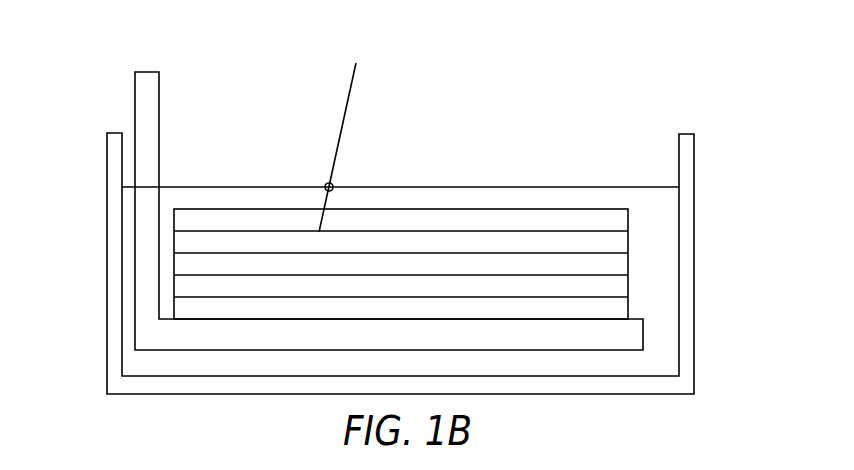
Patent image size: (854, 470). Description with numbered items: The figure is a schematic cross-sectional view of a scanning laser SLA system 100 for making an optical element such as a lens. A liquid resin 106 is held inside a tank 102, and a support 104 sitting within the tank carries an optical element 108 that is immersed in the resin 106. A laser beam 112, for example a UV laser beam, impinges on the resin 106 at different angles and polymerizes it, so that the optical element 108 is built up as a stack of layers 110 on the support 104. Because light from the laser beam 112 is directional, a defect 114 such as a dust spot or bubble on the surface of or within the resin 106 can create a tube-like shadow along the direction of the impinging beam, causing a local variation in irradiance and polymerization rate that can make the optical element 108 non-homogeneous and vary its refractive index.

The processing system 100 is at (602, 79).
The tank 102 is at (693, 230).
The support 104 is at (160, 117).
The liquid resin 106 is at (645, 198).
The optical element 108 is at (172, 242).
The layers 110 is at (612, 287).
The laser beam 112 is at (348, 92).
The defect 114 is at (325, 183).